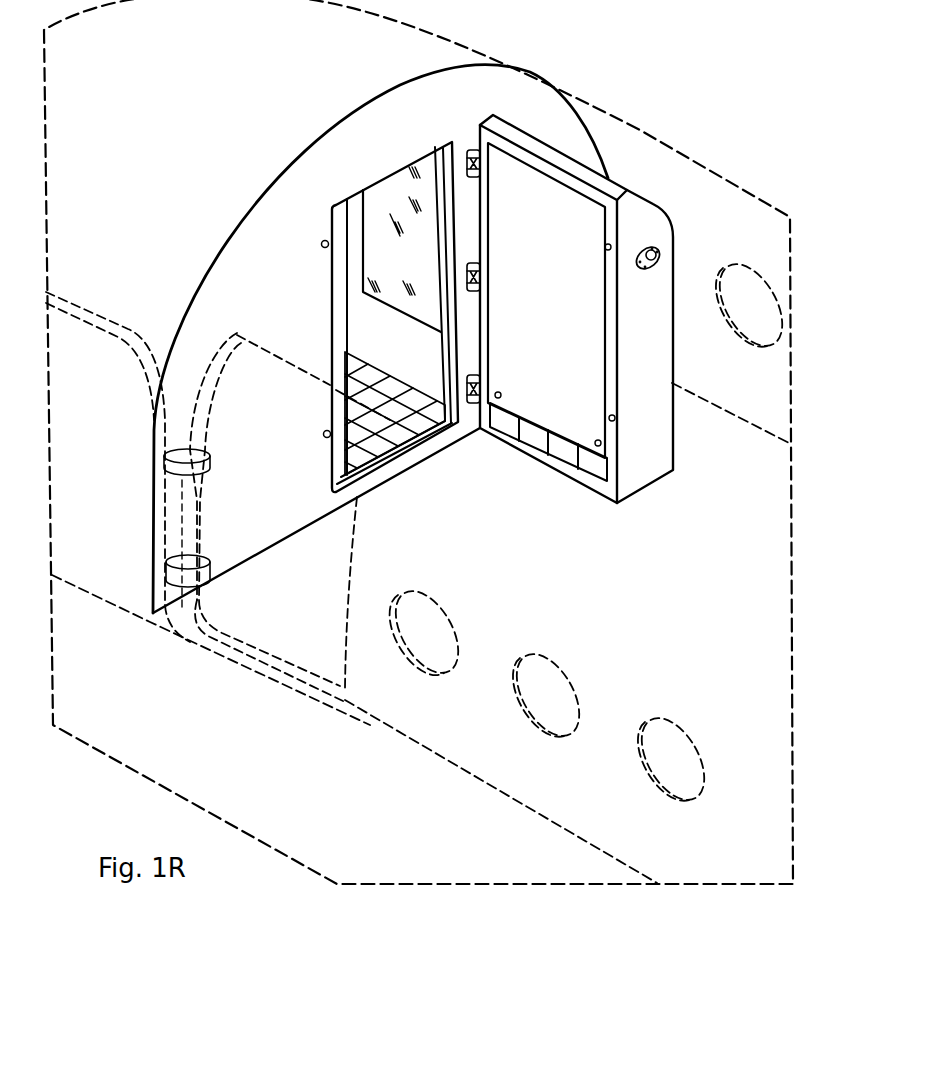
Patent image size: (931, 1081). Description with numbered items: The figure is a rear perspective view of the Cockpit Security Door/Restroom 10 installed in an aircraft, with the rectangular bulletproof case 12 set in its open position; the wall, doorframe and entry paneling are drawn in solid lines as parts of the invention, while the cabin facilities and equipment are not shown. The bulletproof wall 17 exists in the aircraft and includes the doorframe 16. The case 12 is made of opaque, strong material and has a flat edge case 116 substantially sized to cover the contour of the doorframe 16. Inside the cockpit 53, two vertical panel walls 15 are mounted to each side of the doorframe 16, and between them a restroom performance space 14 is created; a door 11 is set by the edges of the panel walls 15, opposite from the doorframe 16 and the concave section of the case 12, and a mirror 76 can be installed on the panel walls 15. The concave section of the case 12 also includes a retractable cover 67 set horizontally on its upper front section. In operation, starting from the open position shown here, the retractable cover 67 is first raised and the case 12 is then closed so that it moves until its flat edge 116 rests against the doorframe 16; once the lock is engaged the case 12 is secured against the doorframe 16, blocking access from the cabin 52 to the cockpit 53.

The Cockpit Security Door/Restroom 10 is at (728, 468).
The door 11 is at (344, 326).
The rectangular bulletproof case 12 is at (654, 387).
The restroom performance space 14 is at (366, 466).
The vertical panel walls 15 is at (396, 352).
The doorframe 16 is at (387, 177).
The bulletproof wall 17 is at (235, 243).
The cabin 52 is at (531, 586).
The cockpit 53 is at (139, 294).
The retractable cover 67 is at (538, 313).
The mirror 76 is at (403, 269).
The flat edge case 116 is at (612, 333).